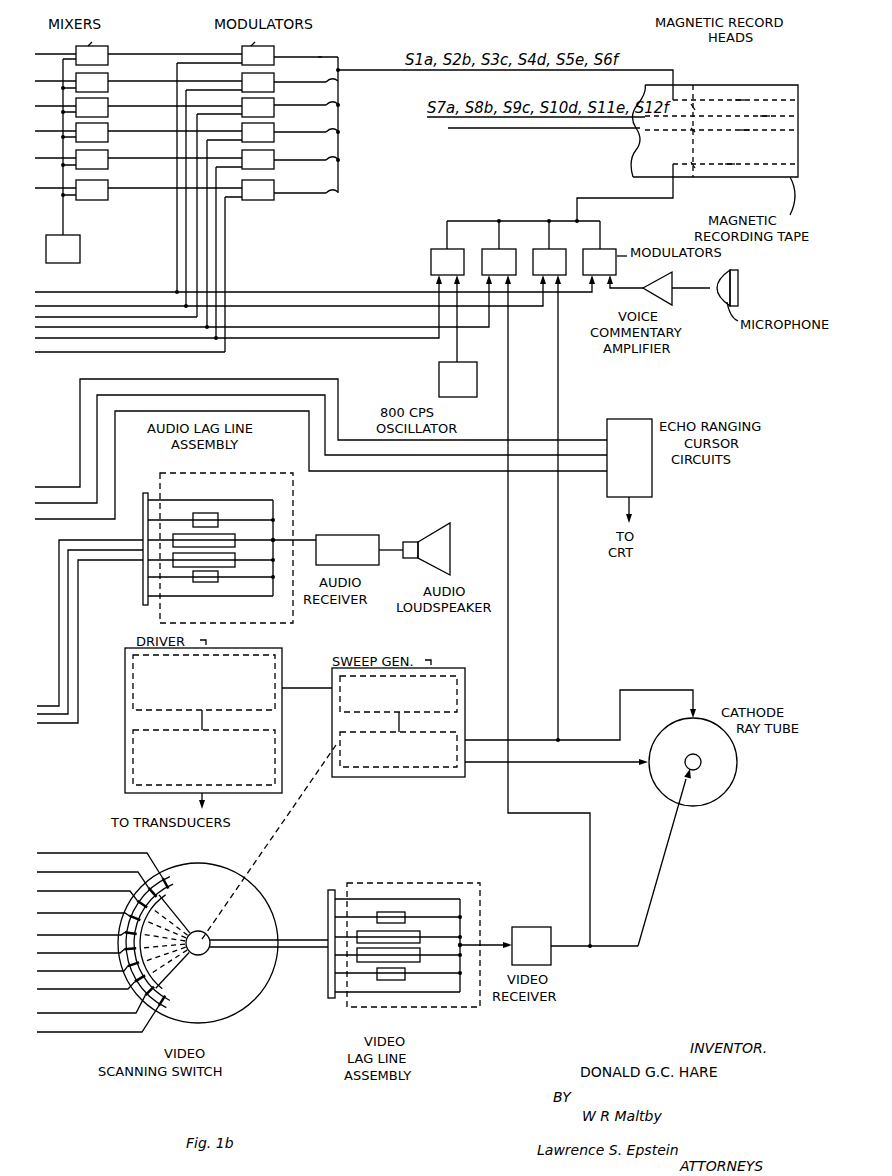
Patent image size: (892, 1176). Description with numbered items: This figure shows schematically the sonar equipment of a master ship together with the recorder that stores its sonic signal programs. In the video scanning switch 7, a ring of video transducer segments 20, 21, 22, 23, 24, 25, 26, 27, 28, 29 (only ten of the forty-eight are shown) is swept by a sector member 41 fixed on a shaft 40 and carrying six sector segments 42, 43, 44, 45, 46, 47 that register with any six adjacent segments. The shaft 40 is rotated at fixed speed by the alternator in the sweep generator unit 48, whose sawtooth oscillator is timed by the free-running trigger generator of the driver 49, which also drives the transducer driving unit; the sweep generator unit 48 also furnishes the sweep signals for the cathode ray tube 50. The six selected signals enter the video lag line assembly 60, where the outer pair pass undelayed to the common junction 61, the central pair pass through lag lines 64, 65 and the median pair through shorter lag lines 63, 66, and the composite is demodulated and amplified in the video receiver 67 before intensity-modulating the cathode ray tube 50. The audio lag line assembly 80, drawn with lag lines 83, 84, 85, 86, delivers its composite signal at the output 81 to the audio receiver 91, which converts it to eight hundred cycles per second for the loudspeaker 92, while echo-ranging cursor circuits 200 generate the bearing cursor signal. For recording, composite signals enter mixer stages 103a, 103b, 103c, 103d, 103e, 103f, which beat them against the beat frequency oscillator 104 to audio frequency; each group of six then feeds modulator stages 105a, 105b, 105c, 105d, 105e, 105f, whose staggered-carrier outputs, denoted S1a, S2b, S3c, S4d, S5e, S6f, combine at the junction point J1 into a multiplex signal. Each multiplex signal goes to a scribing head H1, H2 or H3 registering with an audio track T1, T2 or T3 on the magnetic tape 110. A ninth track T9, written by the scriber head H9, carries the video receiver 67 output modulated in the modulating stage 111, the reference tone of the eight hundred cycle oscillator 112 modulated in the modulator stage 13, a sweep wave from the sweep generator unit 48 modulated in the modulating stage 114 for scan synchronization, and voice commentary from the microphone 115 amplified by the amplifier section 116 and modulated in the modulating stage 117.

The video scanning switch 7 is at (240, 1016).
The modulator stage 13 is at (440, 249).
The video transducer segment 20 is at (160, 1012).
The video transducer segment 21 is at (142, 1000).
The video transducer segment 22 is at (128, 985).
The video transducer segment 23 is at (120, 969).
The video transducer segment 24 is at (118, 951).
The video transducer segment 25 is at (118, 934).
The video transducer segment 26 is at (122, 917).
The video transducer segment 27 is at (130, 902).
The video transducer segment 28 is at (142, 886).
The video transducer segment 29 is at (164, 874).
The shaft 40 is at (209, 937).
The sector member 41 is at (196, 952).
The sector segment 42 is at (160, 986).
The sector segment 43 is at (152, 974).
The sector segment 44 is at (142, 934).
The sector segment 45 is at (146, 920).
The sector segment 46 is at (153, 908).
The sector segment 47 is at (162, 896).
The sweep generator unit 48 is at (465, 702).
The driver 49 is at (282, 660).
The cathode ray tube 50 is at (722, 796).
The video lag line assembly 60 is at (390, 883).
The common junction 61 is at (466, 945).
The median lag line 63 is at (393, 980).
The central lag line 64 is at (365, 960).
The central lag line 65 is at (365, 932).
The median lag line 66 is at (400, 912).
The video receiver 67 is at (536, 927).
The audio lag line assembly 80 is at (160, 490).
The output 81 is at (277, 540).
The audio lag line element 83 is at (206, 582).
The audio lag line element 84 is at (228, 567).
The audio lag line element 85 is at (230, 534).
The audio lag line element 86 is at (196, 513).
The audio receiver 91 is at (358, 535).
The loudspeaker 92 is at (427, 540).
The mixer stage 103a is at (108, 67).
The mixer stage 103b is at (108, 94).
The mixer stage 103c is at (108, 119).
The mixer stage 103d is at (108, 144).
The mixer stage 103e is at (108, 171).
The mixer stage 103f is at (108, 202).
The beat frequency oscillator 104 is at (70, 263).
The modulator stage 105a is at (274, 67).
The modulator stage 105b is at (274, 94).
The modulator stage 105c is at (274, 119).
The modulator stage 105d is at (274, 144).
The modulator stage 105e is at (274, 171).
The modulator stage 105f is at (274, 202).
The magnetic tape 110 is at (764, 178).
The modulating stage 111 is at (492, 249).
The 800 c.p.s. fixed reference frequency oscillator 112 is at (439, 375).
The modulating stage 114 is at (545, 249).
The microphone 115 is at (740, 285).
The amplifier section 116 is at (656, 278).
The modulating stage 117 is at (606, 249).
The echo-ranging cursor circuits 200 is at (629, 419).
The junction point J1 is at (340, 67).
The modulator output signal S1a is at (318, 50).
The modulator output signal S2b is at (338, 80).
The modulator output signal S3c is at (338, 103).
The modulator output signal S4d is at (338, 130).
The modulator output signal S5e is at (338, 158).
The modulator output signal S6f is at (338, 191).
The audio signal scribing head H1 is at (692, 100).
The audio signal scribing head H2 is at (696, 114).
The audio signal scribing head H3 is at (696, 131).
The magnetic scriber head H9 is at (694, 166).
The audio track T1 is at (741, 100).
The audio track T2 is at (767, 115).
The audio track T3 is at (746, 132).
The ninth track T9 is at (729, 166).